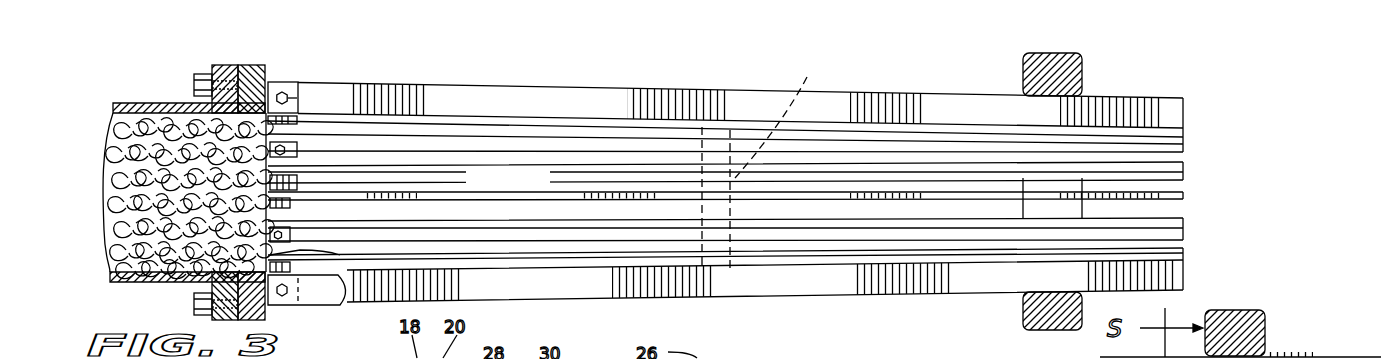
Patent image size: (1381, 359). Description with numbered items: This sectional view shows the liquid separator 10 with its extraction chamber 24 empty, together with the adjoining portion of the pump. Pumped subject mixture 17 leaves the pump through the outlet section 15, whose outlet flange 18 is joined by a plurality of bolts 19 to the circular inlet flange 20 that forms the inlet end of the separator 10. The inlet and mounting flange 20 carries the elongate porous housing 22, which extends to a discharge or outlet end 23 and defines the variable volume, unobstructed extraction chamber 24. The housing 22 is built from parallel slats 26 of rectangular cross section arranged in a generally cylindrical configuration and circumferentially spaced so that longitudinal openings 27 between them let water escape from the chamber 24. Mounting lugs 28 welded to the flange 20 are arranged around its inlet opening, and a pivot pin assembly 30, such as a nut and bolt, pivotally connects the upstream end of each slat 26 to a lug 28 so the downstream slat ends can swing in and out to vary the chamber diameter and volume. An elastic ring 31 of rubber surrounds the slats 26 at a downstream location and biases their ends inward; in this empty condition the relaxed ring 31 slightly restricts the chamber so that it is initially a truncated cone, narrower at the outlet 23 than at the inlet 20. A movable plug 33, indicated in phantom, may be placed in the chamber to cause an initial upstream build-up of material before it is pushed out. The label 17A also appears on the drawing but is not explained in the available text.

The liquid separator 10 is at (1235, 117).
The outlet section 15 is at (140, 287).
The subject mixture 17 is at (103, 147).
The insulation 17A is at (890, 357).
The outlet flange 18 is at (234, 70).
The bolts 19 is at (193, 83).
The inlet flange 20 is at (248, 66).
The porous housing 22 is at (684, 85).
The outlet end 23 is at (1165, 98).
The extraction chamber 24 is at (547, 181).
The slats 26 is at (1190, 200).
The longitudinal openings 27 is at (892, 155).
The mounting lugs 28 is at (290, 82).
The pivot pin assembly 30 is at (297, 100).
The elastic ring 31 is at (1082, 76).
The movable plug 33 is at (765, 163).